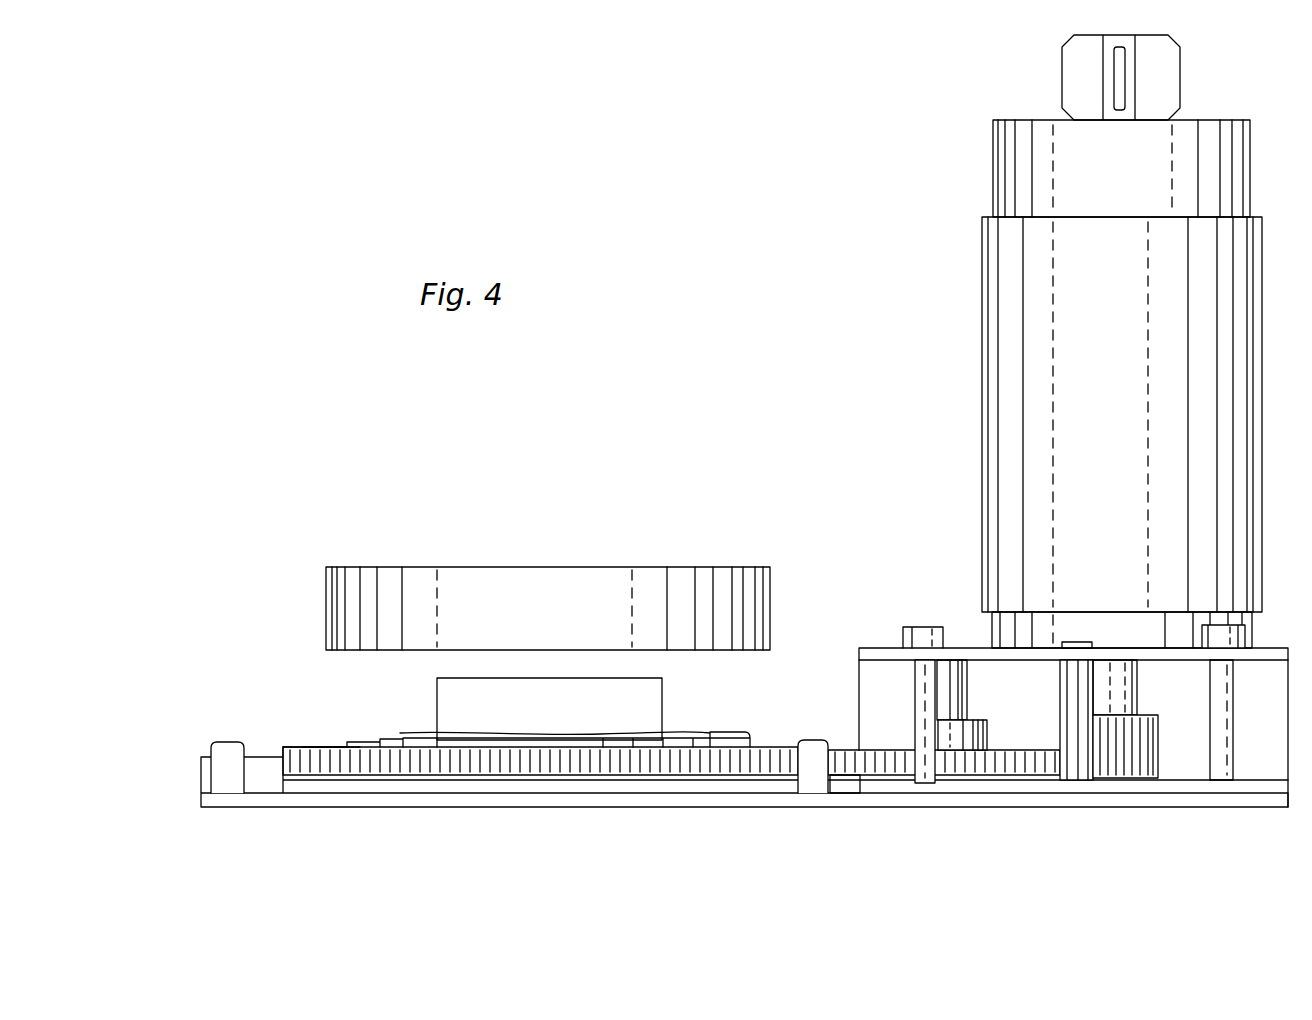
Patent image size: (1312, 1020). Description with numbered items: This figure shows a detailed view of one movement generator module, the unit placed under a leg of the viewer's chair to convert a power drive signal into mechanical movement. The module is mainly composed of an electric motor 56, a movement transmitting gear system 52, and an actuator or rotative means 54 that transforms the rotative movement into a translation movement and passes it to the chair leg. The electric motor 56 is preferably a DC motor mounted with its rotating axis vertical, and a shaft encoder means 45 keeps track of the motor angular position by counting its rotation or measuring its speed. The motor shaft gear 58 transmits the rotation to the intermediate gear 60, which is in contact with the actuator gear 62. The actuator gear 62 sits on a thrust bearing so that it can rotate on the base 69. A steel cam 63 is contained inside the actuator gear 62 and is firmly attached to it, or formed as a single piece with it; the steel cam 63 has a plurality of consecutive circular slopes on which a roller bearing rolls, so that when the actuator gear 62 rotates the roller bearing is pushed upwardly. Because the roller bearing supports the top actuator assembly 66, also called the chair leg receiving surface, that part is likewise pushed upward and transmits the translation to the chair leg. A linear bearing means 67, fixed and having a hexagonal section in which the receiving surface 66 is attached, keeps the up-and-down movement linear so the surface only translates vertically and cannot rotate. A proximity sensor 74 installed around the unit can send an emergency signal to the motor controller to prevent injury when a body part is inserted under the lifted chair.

The shaft encoder means 45 is at (815, 768).
The gear system 52 is at (1105, 745).
The actuator or rotative means 54 is at (345, 747).
The electric motor 56 is at (1012, 290).
The motor shaft gear 58 is at (1127, 760).
The intermediate gear 60 is at (1025, 767).
The actuator gear 62 is at (305, 745).
The steel cam 63 is at (400, 738).
The top actuator assembly 66 is at (598, 580).
The linear bearing means 67 is at (648, 700).
The base 69 is at (387, 800).
The proximity sensor 74 is at (227, 762).